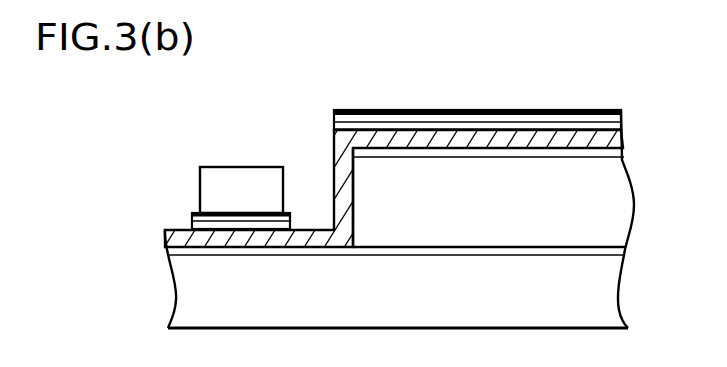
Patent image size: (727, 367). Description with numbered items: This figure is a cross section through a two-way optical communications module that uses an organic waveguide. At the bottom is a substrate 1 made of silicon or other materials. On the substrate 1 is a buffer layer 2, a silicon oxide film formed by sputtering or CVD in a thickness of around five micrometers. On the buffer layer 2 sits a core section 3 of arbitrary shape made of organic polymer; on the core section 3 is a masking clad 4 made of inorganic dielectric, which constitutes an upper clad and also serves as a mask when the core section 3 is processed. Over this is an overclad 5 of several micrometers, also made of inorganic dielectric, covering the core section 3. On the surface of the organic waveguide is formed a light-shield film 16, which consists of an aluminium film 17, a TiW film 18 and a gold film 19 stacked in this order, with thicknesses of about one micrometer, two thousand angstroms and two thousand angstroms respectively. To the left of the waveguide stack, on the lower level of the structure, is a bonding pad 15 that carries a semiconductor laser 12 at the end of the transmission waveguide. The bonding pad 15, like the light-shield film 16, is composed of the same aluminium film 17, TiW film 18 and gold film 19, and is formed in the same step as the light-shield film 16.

The substrate 1 is at (613, 305).
The buffer layer 2 is at (625, 246).
The core section 3 is at (615, 207).
The masking clad 4 is at (610, 157).
The overclad 5 is at (622, 140).
The semiconductor laser 12 is at (247, 178).
The bonding pad 15 is at (186, 213).
The light-shield film 16 is at (327, 110).
The aluminium film 17 is at (273, 226).
The TiW film 18 is at (238, 226).
The gold film 19 is at (267, 211).